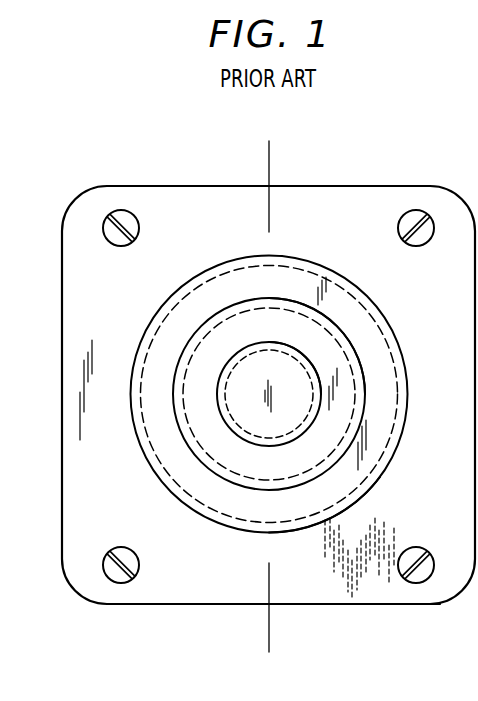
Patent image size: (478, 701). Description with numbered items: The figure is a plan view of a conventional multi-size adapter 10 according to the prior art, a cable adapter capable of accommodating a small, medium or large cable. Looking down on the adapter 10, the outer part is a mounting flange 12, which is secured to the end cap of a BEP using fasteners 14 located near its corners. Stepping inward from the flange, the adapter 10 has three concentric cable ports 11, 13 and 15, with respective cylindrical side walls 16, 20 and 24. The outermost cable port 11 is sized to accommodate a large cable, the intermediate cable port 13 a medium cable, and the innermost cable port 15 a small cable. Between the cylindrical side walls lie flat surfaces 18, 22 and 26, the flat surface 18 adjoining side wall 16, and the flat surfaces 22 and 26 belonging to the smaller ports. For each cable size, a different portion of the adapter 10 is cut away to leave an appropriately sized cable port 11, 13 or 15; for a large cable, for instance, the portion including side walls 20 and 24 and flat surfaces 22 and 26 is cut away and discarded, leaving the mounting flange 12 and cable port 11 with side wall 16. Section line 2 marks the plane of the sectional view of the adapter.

The multi-size adapter 10 is at (398, 168).
The cable port 11 is at (213, 518).
The mounting flange 12 is at (370, 607).
The cable port 13 is at (172, 363).
The fasteners 14 is at (110, 522).
The cable port 15 is at (218, 422).
The cylindrical side wall 16 is at (315, 529).
The flat surface 18 is at (373, 415).
The cylindrical side wall 20 is at (368, 396).
The flat surface 22 is at (325, 345).
The cylindrical side wall 24 is at (279, 343).
The flat surface 26 is at (249, 370).
The section line 2- 2 is at (269, 141).